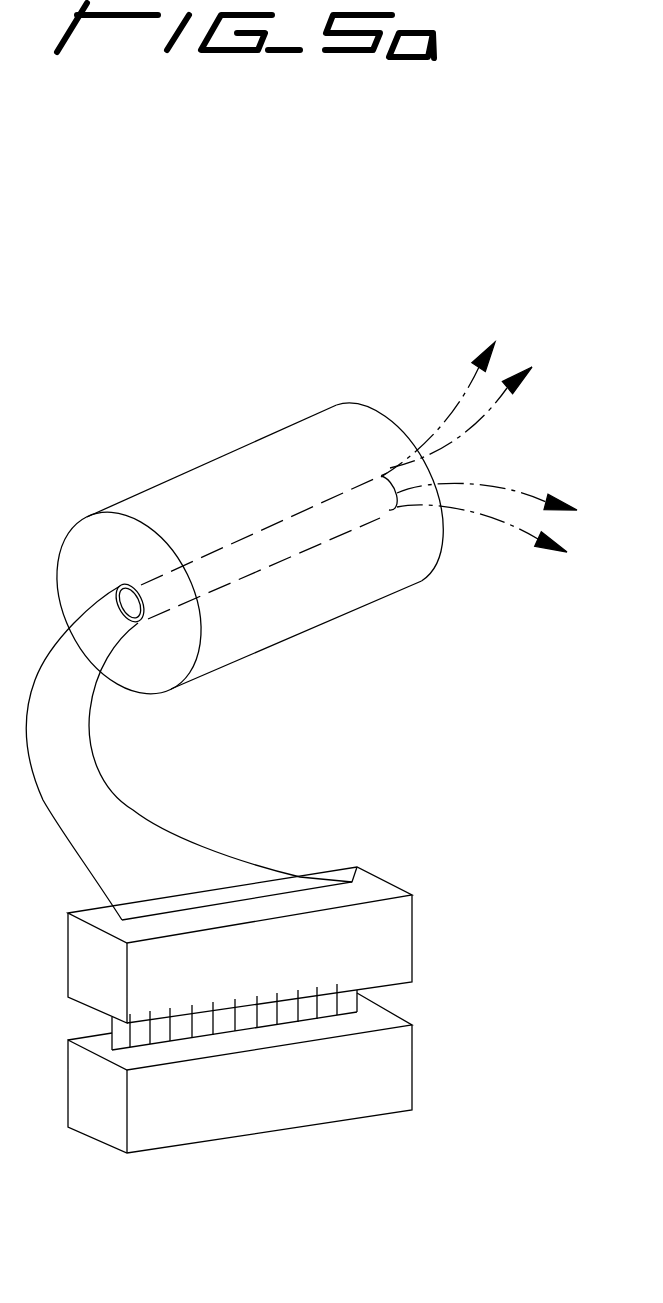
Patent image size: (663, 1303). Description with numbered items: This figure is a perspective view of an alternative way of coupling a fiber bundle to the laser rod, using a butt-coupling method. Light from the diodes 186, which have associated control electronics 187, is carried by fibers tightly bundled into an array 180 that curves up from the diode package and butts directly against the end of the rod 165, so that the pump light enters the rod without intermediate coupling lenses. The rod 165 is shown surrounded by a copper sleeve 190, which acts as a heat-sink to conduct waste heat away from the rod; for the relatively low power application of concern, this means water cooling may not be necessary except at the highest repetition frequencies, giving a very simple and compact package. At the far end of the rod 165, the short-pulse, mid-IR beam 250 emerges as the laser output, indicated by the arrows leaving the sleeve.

The copper sleeve 190 is at (277, 457).
The rod 165 is at (293, 549).
The short-pulse, mid-IR beam 250 is at (430, 440).
The array 180 is at (103, 797).
The diode arrays 186 is at (390, 946).
The control electronics 187 is at (378, 1097).